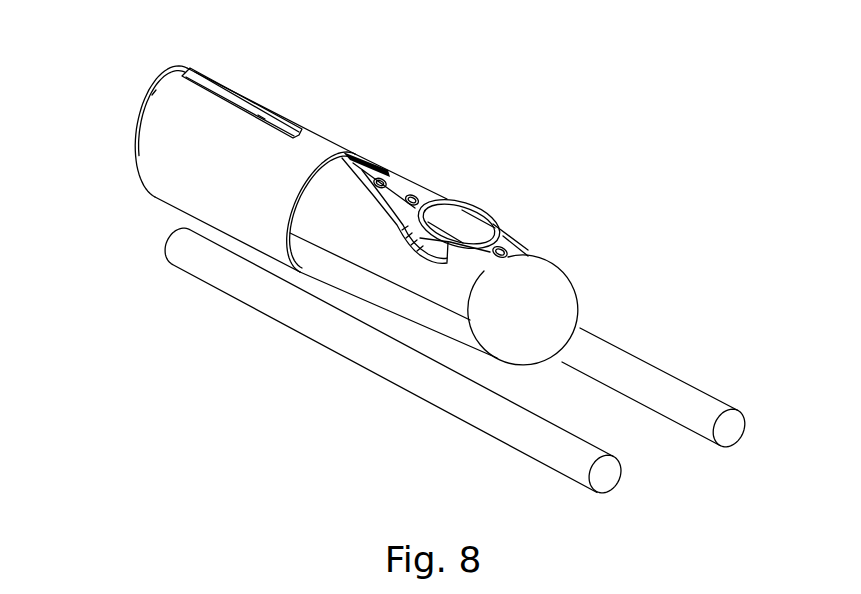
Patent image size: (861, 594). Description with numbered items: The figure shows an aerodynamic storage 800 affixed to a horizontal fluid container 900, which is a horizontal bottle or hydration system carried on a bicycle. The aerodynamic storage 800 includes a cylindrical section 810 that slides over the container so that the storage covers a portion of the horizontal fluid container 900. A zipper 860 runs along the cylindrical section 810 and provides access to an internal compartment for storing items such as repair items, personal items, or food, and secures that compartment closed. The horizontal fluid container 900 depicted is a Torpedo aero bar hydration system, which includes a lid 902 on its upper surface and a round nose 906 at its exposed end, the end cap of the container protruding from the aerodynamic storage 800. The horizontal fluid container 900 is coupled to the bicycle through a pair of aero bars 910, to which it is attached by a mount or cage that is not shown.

The aerodynamic storage 800 is at (116, 103).
The cylindrical section 810 is at (307, 150).
The zipper 860 is at (231, 99).
The horizontal fluid container 900 is at (512, 278).
The lid 902 is at (453, 220).
The round nose 906 is at (547, 320).
The aero bars 910 is at (700, 407).